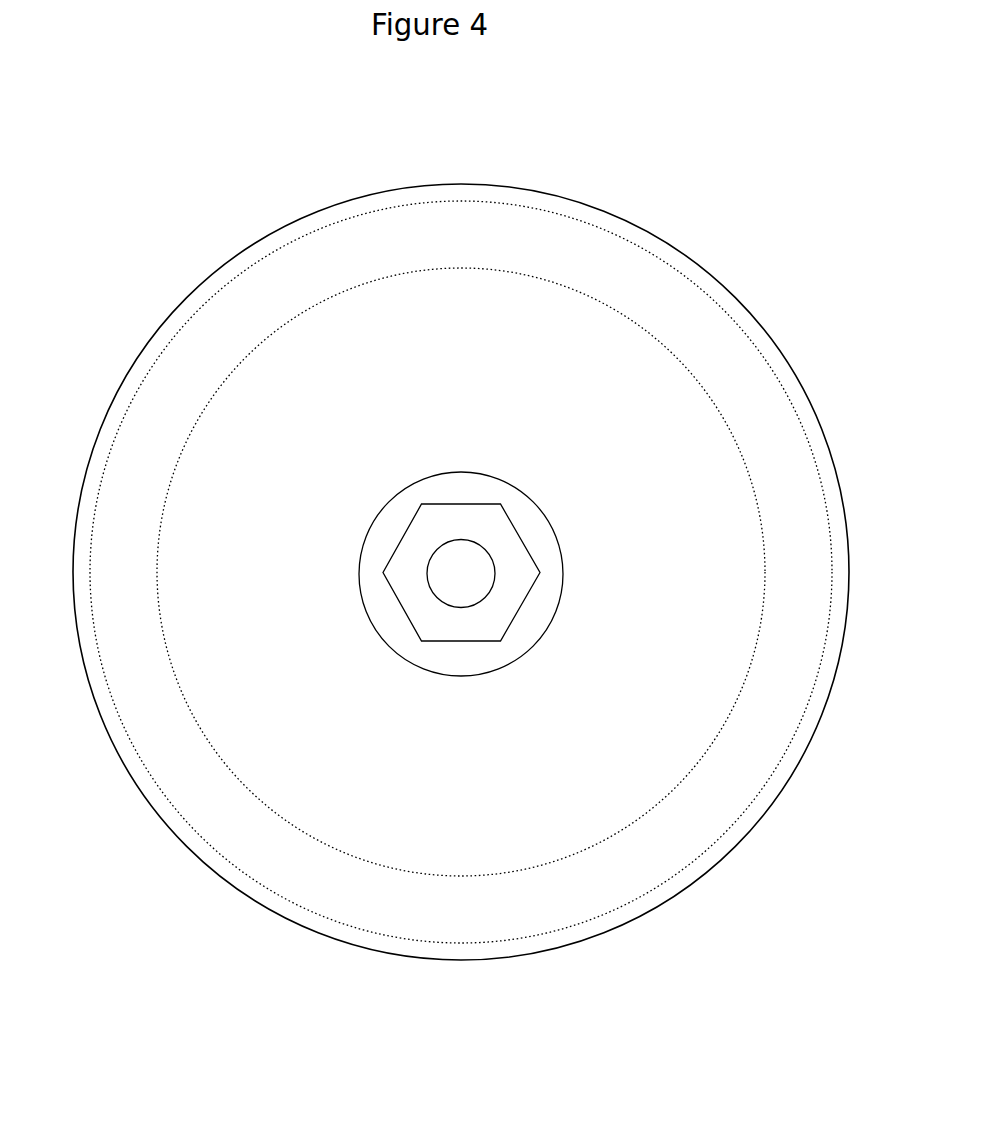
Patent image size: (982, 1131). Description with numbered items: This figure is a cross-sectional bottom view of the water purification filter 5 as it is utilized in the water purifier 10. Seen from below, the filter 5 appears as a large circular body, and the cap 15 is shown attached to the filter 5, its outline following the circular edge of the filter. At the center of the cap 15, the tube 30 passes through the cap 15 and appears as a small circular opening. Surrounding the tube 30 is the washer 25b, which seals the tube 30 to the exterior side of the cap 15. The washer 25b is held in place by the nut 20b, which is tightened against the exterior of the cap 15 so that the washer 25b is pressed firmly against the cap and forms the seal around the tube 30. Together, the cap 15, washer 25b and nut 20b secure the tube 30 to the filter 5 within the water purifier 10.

The water purifier 10 is at (145, 294).
The cap 15 is at (662, 239).
The water purification filter 5 is at (736, 322).
The nut 20b is at (550, 525).
The washer 25b is at (465, 503).
The tube 30 is at (430, 557).